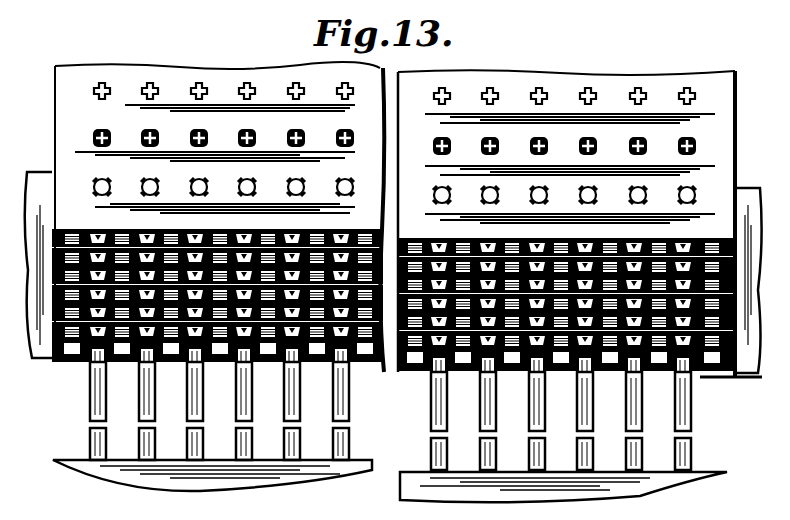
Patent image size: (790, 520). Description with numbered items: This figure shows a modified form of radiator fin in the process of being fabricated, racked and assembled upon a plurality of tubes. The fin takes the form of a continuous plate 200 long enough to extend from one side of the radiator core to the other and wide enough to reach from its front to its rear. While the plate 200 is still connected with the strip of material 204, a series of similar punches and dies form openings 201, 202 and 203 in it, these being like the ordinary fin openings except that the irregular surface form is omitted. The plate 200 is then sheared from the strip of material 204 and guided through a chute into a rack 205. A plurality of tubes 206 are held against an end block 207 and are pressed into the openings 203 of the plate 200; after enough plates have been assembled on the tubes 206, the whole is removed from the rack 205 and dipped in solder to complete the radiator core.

The continuous plate 200 is at (300, 242).
The opening 201 is at (100, 95).
The opening 202 is at (98, 141).
The opening 203 is at (98, 191).
The strip of material 204 is at (178, 66).
The rack 205 is at (33, 360).
The tubes 206 is at (91, 411).
The end block 207 is at (602, 492).